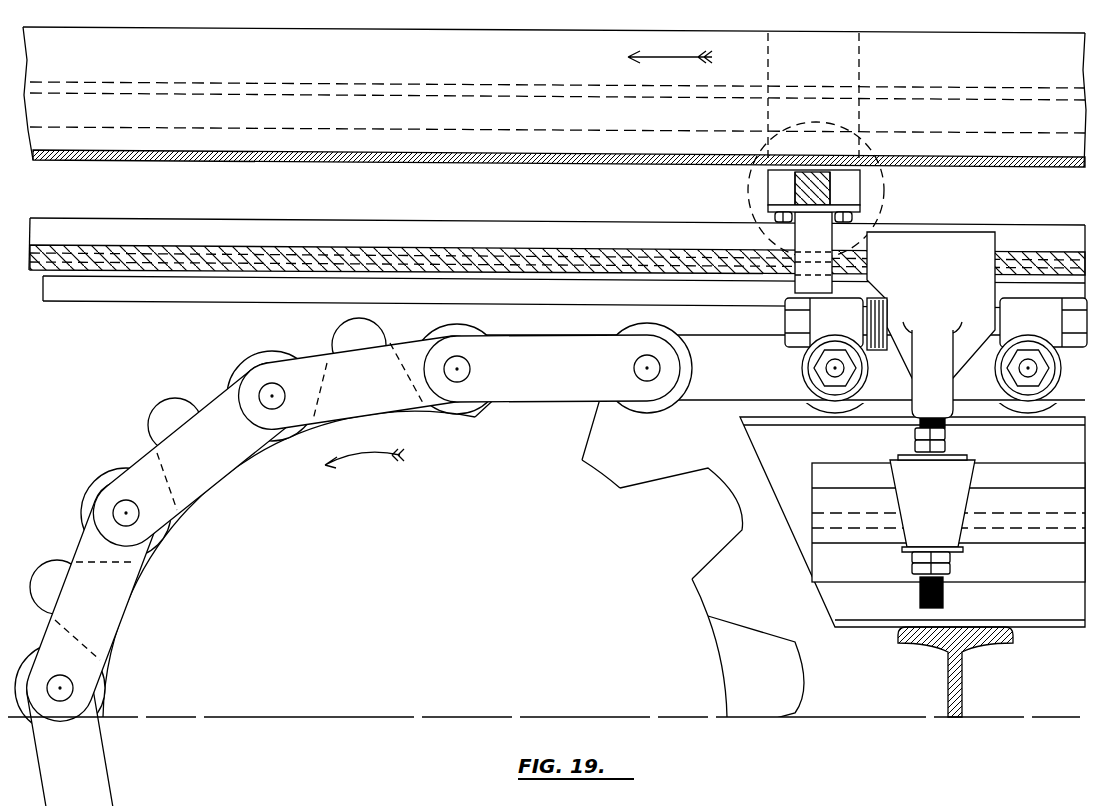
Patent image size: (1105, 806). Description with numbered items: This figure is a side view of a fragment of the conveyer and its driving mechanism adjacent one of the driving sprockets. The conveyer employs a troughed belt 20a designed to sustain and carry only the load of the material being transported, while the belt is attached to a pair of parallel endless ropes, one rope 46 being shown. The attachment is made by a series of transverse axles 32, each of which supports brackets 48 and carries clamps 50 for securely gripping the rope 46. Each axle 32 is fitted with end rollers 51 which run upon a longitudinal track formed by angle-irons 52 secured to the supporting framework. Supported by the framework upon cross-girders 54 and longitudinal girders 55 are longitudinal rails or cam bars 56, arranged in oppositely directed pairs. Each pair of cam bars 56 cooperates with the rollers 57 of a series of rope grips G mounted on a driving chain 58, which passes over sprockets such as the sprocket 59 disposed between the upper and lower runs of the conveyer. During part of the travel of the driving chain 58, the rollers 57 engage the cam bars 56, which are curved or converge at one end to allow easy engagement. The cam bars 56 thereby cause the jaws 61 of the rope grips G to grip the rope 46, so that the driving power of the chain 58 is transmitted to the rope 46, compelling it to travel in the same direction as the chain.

The troughed belt 20a is at (554, 97).
The transverse axle 32 is at (815, 189).
The endless rope 46 is at (205, 263).
The bracket 48 is at (768, 171).
The clamp 50 is at (806, 236).
The end roller 51 is at (871, 202).
The angle-iron 52 is at (105, 303).
The cross-girder 54 is at (958, 687).
The longitudinal girder 55 is at (1048, 610).
The cam bar 56 is at (838, 478).
The roller 57 is at (932, 513).
The driving chain 58 is at (550, 562).
The sprocket 59 is at (700, 616).
The jaw 61 is at (931, 305).
The rope grip G is at (932, 354).